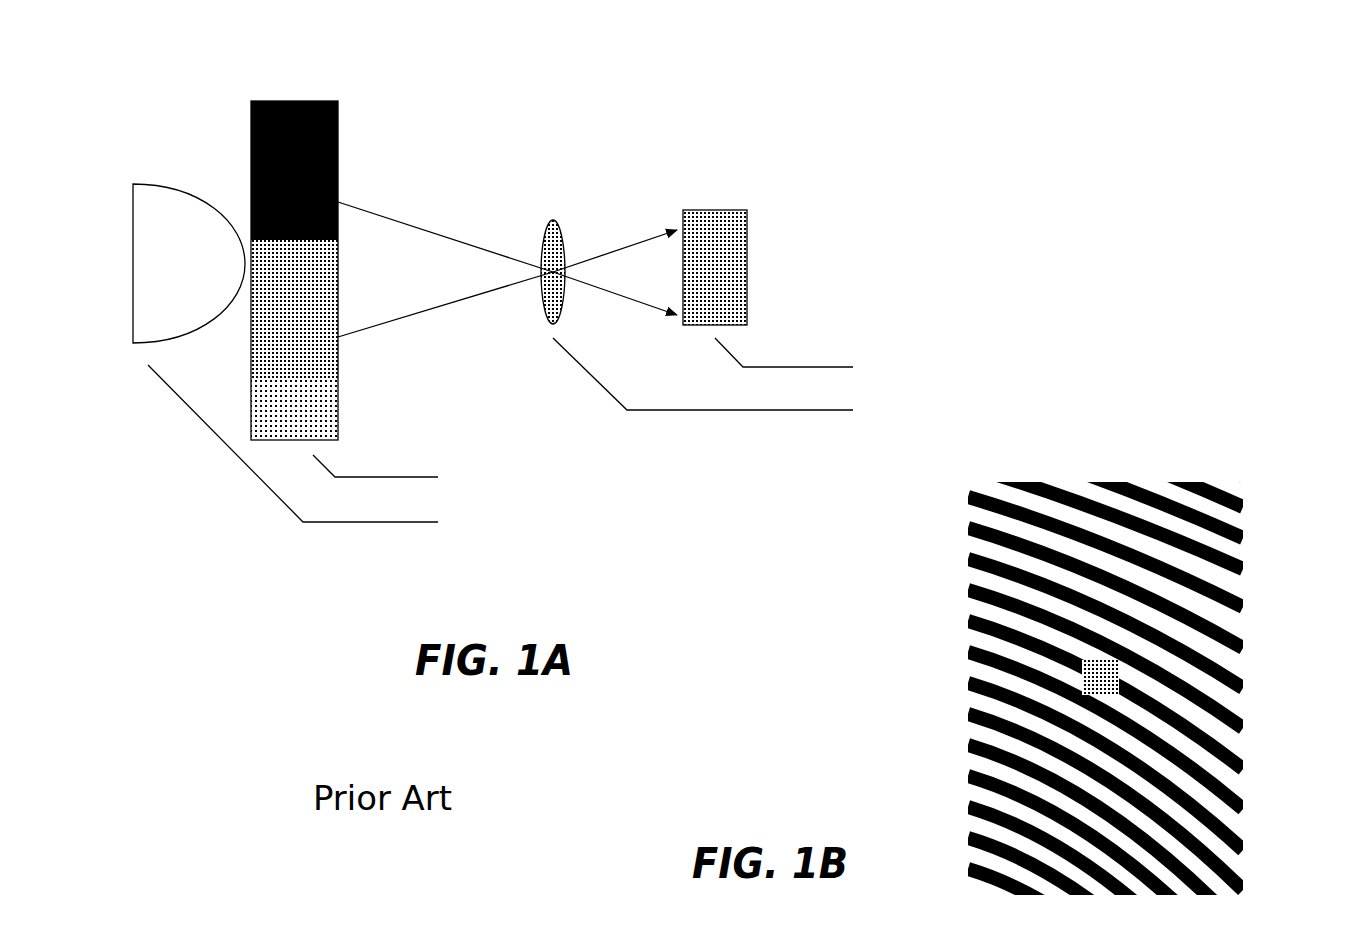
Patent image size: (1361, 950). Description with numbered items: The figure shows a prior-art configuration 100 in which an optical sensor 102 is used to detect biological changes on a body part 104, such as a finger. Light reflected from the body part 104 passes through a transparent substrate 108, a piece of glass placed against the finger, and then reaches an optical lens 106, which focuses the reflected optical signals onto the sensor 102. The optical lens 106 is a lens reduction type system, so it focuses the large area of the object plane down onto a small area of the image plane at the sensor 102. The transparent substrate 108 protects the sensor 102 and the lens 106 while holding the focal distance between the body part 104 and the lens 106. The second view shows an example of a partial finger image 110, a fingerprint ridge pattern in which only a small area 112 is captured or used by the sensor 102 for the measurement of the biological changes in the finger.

In FIG. 1A, the configuration 100 is at (550, 286).
In FIG. 1A, the optical sensor 102 is at (828, 279).
In FIG. 1A, the body part 104 is at (338, 342).
In FIG. 1A, the optical lens 106 is at (730, 310).
In FIG. 1A, the transparent substrate 108 is at (446, 284).
In FIG. 1B, the partial finger image 110 is at (1105, 661).
In FIG. 1B, the small area 112 is at (1127, 658).